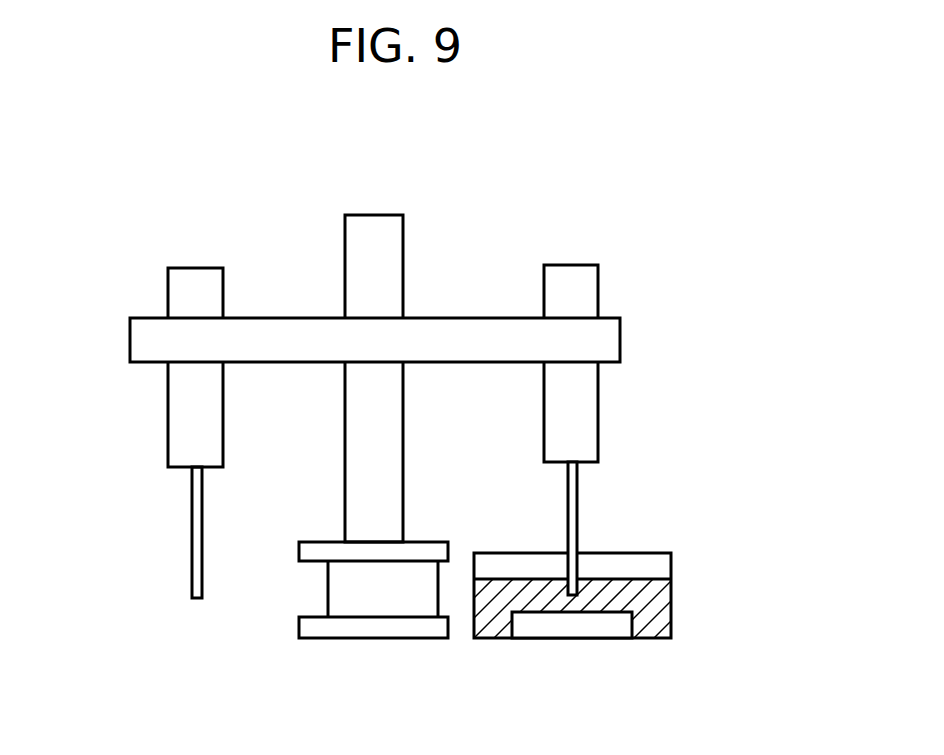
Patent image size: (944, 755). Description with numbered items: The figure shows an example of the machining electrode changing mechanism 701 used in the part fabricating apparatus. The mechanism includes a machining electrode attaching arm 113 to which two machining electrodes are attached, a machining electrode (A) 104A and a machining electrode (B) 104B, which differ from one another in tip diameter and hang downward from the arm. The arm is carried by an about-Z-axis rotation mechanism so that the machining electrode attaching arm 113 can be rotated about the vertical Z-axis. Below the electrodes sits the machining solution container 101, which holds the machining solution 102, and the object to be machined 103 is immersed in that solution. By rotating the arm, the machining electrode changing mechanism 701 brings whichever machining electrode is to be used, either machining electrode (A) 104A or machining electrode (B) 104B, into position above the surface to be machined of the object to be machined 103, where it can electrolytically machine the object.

The machining electrode attaching arm 113 is at (438, 335).
The machining electrode (A) 104A is at (572, 530).
The machining electrode (B) 104B is at (193, 547).
The machining solution container 101 is at (660, 563).
The machining solution 102 is at (653, 593).
The object to be machined 103 is at (560, 630).
The machining electrode changing mechanism 701 is at (348, 628).